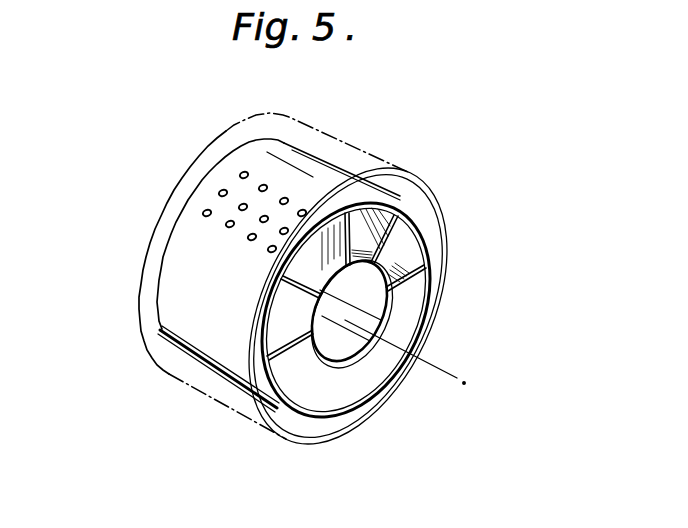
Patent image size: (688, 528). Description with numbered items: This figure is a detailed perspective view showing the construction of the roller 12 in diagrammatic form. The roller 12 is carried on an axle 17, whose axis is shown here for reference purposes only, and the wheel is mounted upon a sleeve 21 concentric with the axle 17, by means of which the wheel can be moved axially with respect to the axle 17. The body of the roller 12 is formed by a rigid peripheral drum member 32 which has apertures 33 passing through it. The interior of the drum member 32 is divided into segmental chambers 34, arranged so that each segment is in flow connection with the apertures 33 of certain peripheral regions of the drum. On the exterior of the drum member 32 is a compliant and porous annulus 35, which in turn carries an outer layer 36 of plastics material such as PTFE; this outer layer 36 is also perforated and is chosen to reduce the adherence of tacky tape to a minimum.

The roller 12 is at (459, 166).
The axle 17 is at (167, 210).
The sleeve 21 is at (387, 267).
The peripheral drum member 32 is at (417, 337).
The apertures 33 is at (220, 193).
The segmental chambers 34 is at (382, 199).
The compliant and porous annulus 35 is at (437, 285).
The outer layer of plastics material 36 is at (140, 321).